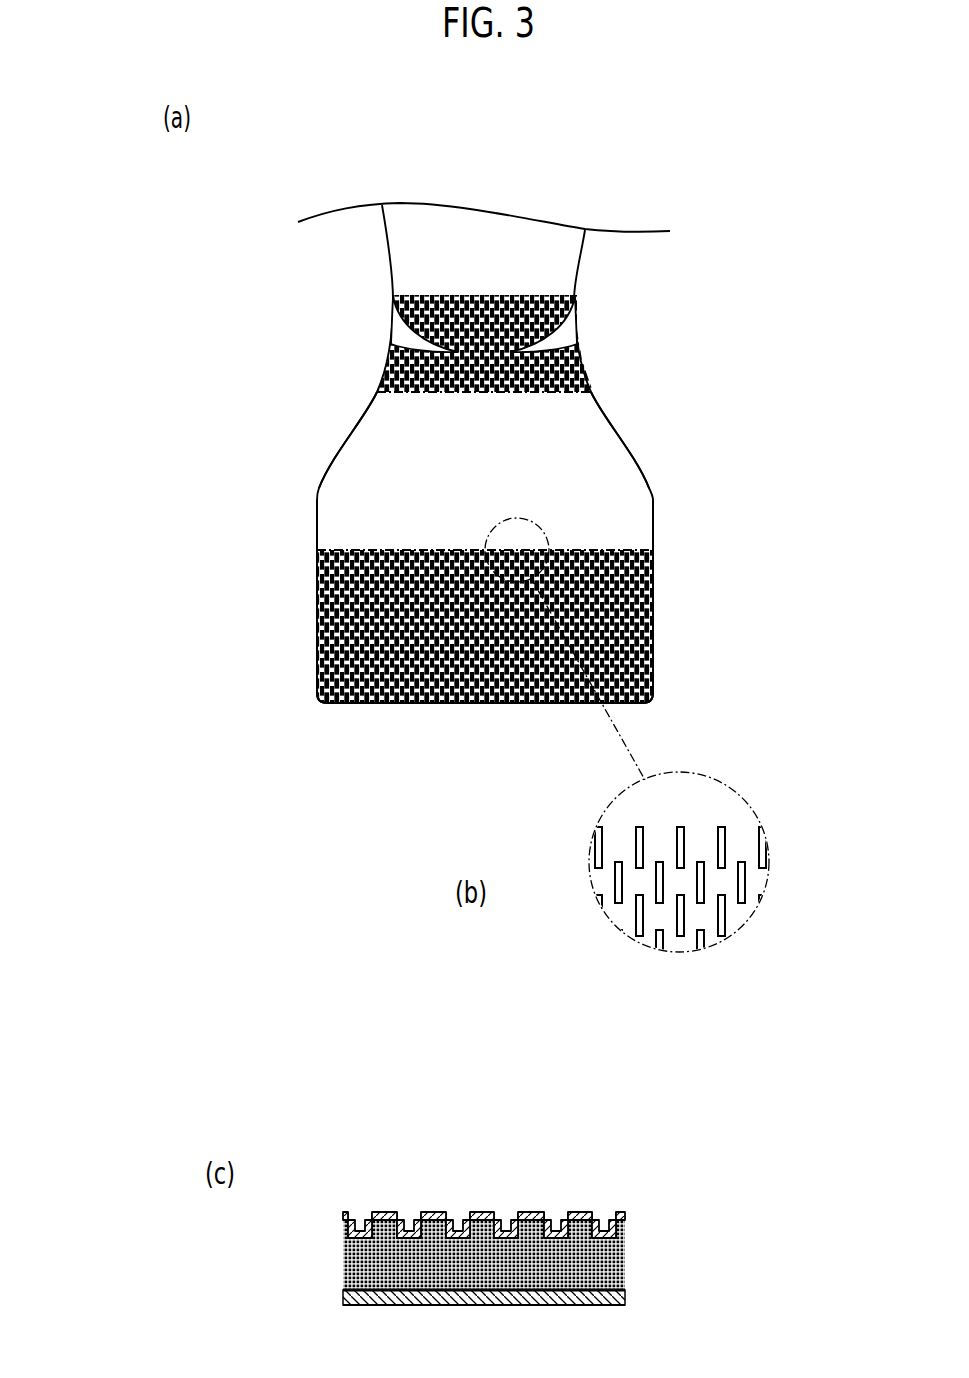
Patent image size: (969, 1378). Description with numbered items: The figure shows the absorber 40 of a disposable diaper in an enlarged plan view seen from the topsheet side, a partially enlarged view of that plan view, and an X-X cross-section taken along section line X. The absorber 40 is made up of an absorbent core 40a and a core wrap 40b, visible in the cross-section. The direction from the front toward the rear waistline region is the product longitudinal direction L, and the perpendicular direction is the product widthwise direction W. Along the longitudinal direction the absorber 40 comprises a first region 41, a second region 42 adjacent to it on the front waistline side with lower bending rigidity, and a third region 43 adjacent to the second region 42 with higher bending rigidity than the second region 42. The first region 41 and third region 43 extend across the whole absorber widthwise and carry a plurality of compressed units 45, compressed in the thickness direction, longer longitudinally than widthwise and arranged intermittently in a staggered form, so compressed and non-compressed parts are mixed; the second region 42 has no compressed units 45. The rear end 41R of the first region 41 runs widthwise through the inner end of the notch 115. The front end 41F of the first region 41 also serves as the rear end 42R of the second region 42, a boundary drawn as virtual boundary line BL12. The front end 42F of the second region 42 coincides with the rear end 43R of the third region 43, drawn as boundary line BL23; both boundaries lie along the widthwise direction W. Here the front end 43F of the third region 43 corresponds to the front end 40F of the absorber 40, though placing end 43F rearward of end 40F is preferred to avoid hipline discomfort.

The absorber 40 is at (367, 336).
The first region 41 is at (481, 319).
The second region 42 is at (625, 478).
The third region 43 is at (653, 612).
The notch 115 is at (568, 322).
The end at the rear waistline region side of the first region 41R is at (428, 298).
The end at the front waistline region side of the first region 41F is at (378, 409).
The end at the rear waistline side of the second region 42R is at (431, 402).
The end at the front waistline region side of the second region 42F is at (350, 550).
The end at the rear waistline region side of the third region 43R is at (440, 530).
The end at the front waistline region side of the third region 43F is at (485, 738).
The end at the front waistline region side of the absorber 40F is at (475, 703).
The boundary line BL12 is at (580, 392).
The boundary line between second and third regions BL23 is at (620, 550).
The compressed units 45 is at (700, 943).
The absorbent core 40a is at (580, 1217).
The core wrap 40b is at (392, 1247).
The product widthwise direction W is at (515, 142).
The product longitudinal direction L is at (230, 430).
The X-X cross-section line X is at (563, 843).